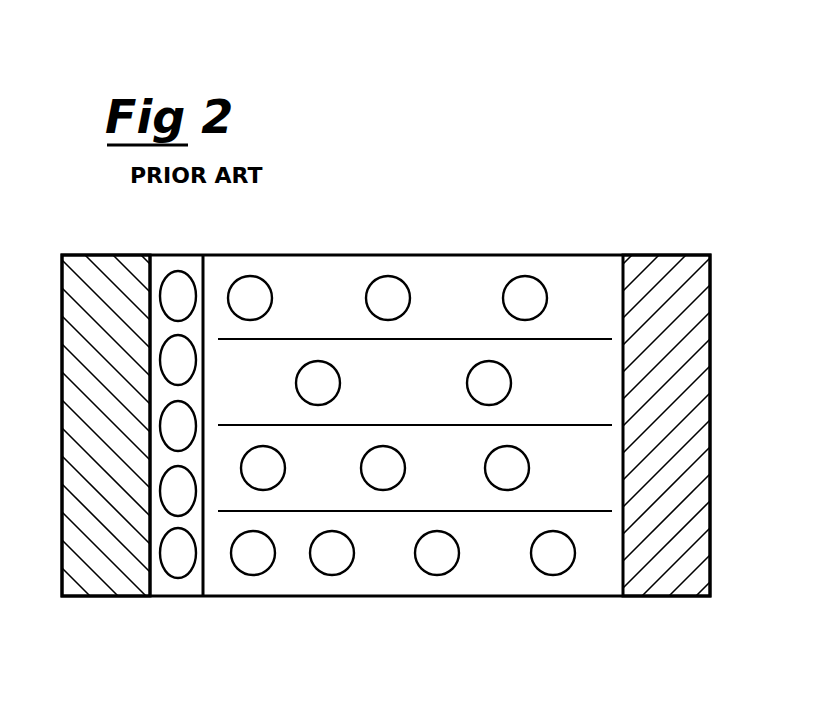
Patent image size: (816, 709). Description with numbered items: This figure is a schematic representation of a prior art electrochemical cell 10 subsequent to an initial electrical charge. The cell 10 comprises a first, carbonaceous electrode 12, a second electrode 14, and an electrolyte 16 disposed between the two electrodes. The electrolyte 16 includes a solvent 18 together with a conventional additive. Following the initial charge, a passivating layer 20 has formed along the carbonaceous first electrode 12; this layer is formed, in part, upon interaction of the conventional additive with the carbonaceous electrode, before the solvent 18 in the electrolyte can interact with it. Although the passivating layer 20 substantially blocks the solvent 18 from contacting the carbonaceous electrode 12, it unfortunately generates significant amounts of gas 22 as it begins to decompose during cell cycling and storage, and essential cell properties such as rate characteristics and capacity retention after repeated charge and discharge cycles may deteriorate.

The electrochemical cell 10 is at (484, 200).
The first electrode 12 is at (112, 597).
The second electrode 14 is at (666, 597).
The electrolyte 16 is at (380, 597).
The solvent 18 is at (525, 276).
The passivating layer 20 is at (178, 270).
The gas 22 is at (250, 276).